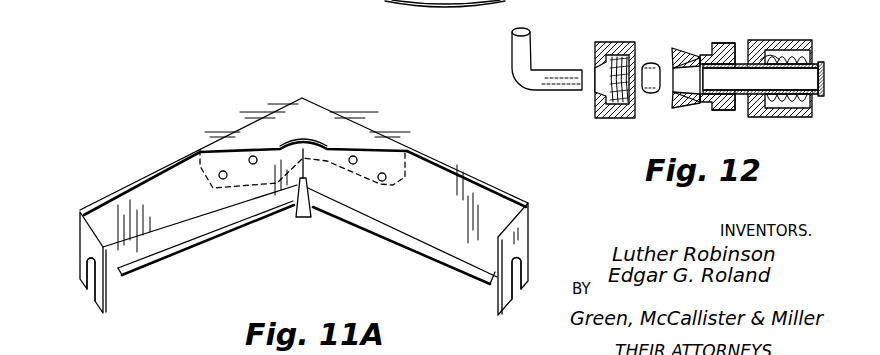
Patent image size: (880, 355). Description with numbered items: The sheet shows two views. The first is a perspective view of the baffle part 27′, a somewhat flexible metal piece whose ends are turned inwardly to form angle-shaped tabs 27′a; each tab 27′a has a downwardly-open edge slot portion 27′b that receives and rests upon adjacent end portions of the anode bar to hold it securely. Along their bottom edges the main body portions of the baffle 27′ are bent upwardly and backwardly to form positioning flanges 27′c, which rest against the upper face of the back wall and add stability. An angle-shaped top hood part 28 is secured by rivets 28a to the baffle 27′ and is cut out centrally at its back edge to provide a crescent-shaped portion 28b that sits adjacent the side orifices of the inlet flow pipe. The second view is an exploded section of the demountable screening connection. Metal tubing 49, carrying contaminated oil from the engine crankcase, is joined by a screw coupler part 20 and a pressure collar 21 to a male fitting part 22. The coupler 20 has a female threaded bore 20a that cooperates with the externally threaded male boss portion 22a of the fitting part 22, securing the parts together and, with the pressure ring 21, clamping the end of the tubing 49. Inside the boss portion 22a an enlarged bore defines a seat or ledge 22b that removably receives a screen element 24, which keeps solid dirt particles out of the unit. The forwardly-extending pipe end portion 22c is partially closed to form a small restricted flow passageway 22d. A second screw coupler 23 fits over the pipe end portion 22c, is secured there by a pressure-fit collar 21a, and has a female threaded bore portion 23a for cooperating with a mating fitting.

In FIG. 11A, the top hood part 28 is at (332, 118).
In FIG. 11A, the rivets 28a is at (384, 181).
In FIG. 11A, the crescent-shaped portion 28b is at (288, 143).
In FIG. 11A, the baffle part 27′ is at (488, 186).
In FIG. 11A, the tabs 27′a is at (88, 233).
In FIG. 11A, the edge slot portion 27′b is at (88, 283).
In FIG. 11A, the positioning flanges 27′c is at (197, 249).
In FIG. 12, the metal tubing 49 is at (530, 58).
In FIG. 12, the screw coupler part 20 is at (595, 117).
In FIG. 12, the threaded bore 20a is at (633, 54).
In FIG. 12, the pressure collar 21 is at (652, 95).
In FIG. 12, the pressure-fit collar 21a is at (760, 60).
In FIG. 12, the screen element 24 is at (672, 75).
In FIG. 12, the male fitting part 22 is at (713, 112).
In FIG. 12, the male boss portion 22a is at (690, 107).
In FIG. 12, the seat or ledge 22b is at (693, 52).
In FIG. 12, the pipe end portion 22c is at (743, 63).
In FIG. 12, the restricted flow passageway 22d is at (825, 79).
In FIG. 12, the second screw coupler 23 is at (772, 117).
In FIG. 12, the female threaded bore portion 23a is at (813, 58).